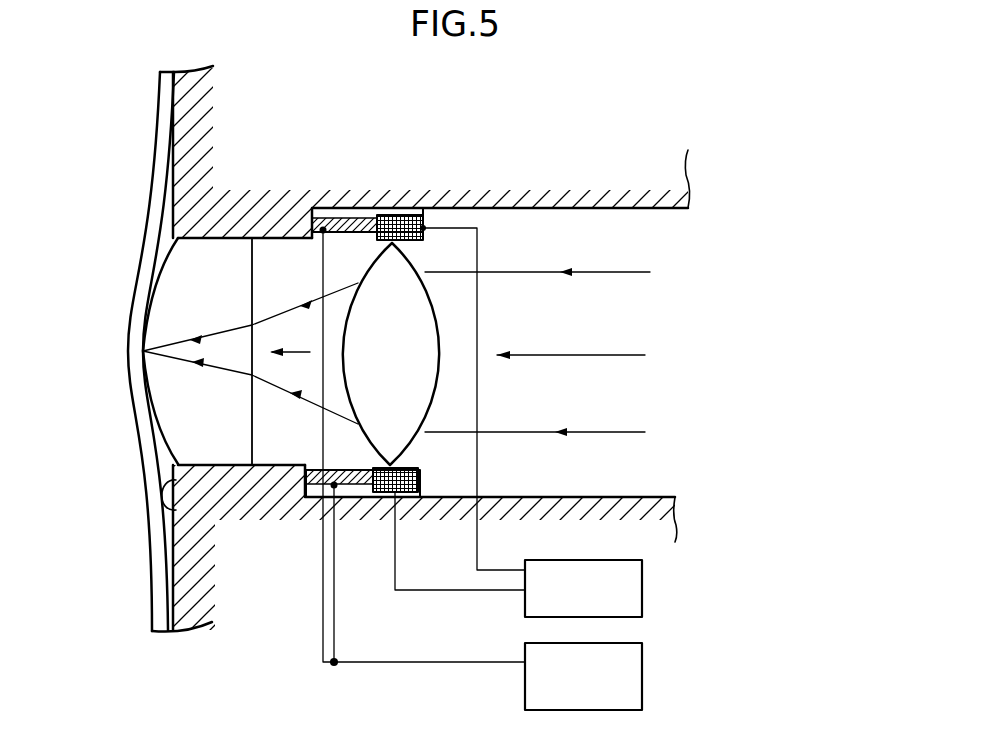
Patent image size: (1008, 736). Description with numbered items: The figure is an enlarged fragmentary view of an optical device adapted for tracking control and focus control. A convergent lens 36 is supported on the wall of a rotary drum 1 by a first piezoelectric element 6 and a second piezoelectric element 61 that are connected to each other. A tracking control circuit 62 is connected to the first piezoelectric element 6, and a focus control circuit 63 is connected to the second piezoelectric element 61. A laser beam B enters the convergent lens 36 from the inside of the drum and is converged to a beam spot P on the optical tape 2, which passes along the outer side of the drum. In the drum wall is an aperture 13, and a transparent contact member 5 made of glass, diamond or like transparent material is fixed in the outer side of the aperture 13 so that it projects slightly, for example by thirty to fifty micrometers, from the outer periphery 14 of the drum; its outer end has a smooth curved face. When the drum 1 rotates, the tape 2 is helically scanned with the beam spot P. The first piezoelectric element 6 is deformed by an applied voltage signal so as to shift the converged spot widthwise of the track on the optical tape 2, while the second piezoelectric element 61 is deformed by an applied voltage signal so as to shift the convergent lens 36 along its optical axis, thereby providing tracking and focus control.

The rotary drum 1 is at (243, 98).
The optical tape 2 is at (160, 210).
The transparent contact member 5 is at (222, 256).
The first piezoelectric element 6 is at (412, 216).
The aperture 13 is at (275, 452).
The outer periphery 14 is at (173, 512).
The convergent lens 36 is at (440, 316).
The second piezoelectric element 61 is at (352, 220).
The tracking control circuit 62 is at (628, 597).
The focus control circuit 63 is at (628, 673).
The laser beam B is at (588, 272).
The beam spot P is at (142, 346).